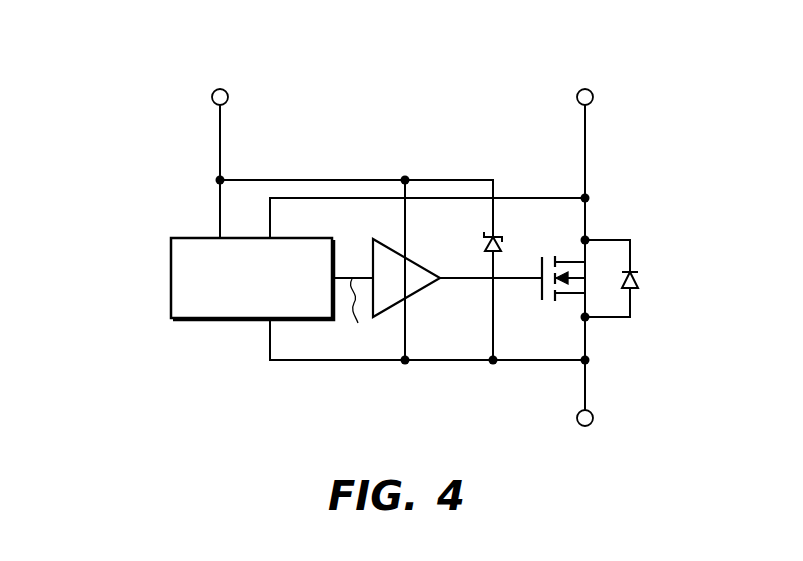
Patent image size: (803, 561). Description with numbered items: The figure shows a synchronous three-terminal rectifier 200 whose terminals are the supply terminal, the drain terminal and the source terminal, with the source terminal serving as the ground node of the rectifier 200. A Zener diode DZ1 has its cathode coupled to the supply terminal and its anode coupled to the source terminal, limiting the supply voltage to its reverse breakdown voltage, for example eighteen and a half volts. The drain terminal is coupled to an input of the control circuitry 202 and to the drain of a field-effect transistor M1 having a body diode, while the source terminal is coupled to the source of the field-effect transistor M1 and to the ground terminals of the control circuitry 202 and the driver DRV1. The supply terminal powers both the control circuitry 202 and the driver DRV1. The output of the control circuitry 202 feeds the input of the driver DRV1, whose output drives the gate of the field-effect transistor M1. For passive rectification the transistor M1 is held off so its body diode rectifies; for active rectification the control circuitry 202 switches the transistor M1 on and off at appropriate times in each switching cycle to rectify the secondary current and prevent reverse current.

The three-terminal rectifier 200 is at (163, 77).
The control circuitry 202 is at (270, 306).
The driver DRV1 is at (423, 284).
The Zener diode DZ1 is at (515, 229).
The field-effect transistor M1 is at (585, 289).